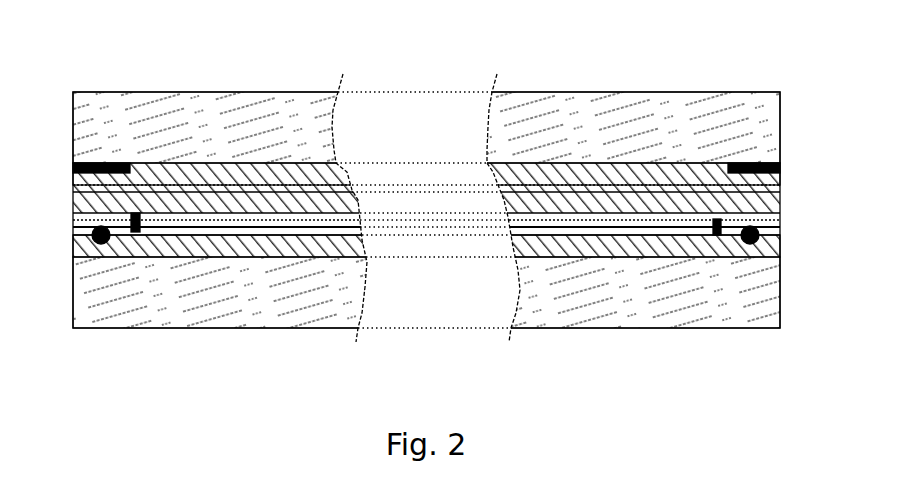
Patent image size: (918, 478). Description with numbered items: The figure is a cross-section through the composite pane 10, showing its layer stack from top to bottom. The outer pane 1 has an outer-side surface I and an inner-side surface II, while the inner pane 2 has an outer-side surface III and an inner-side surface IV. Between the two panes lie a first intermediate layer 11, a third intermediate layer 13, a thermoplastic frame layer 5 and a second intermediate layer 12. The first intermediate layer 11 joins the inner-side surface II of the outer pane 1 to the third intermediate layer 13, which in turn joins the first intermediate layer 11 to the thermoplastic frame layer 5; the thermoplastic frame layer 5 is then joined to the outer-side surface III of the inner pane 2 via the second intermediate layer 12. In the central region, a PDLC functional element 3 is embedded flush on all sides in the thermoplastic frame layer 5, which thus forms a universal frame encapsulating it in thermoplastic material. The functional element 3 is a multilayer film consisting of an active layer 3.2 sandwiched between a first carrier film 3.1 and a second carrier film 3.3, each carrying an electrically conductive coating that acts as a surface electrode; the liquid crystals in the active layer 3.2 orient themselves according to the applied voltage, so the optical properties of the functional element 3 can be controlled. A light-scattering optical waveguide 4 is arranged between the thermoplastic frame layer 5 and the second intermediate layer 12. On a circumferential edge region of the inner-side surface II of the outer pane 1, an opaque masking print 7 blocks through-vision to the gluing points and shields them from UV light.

The composite pane 10 is at (601, 71).
The outer pane 1 is at (335, 127).
The inner pane 2 is at (518, 295).
The first intermediate layer 11 is at (337, 170).
The second intermediate layer 12 is at (360, 245).
The third intermediate layer 13 is at (357, 185).
The functional element 3 is at (426, 226).
The first carrier film 3.1 is at (512, 215).
The active layer 3.2 is at (512, 223).
The second carrier film 3.3 is at (513, 233).
The optical waveguide 4 is at (95, 238).
The thermoplastic frame layer 5 is at (82, 224).
The opaque masking print 7 is at (778, 164).
The outer-side surface of the outer pane I is at (88, 86).
The inner-side surface of the outer pane II is at (90, 160).
The outer-side surface of the inner pane III is at (90, 262).
The inner-side surface of the inner pane IV is at (90, 335).